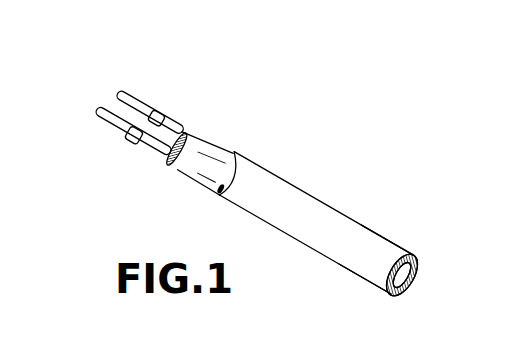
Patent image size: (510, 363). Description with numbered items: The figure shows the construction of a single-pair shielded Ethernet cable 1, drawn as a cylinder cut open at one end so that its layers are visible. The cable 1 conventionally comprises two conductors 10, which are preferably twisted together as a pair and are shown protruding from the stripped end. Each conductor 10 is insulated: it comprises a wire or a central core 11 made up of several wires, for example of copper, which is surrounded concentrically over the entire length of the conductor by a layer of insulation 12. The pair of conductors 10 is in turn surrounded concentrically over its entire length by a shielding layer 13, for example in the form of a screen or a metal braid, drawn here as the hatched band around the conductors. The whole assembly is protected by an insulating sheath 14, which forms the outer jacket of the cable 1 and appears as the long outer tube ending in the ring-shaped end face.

The single-pair shielded Ethernet cable 1 is at (331, 186).
The conductor 10 is at (141, 127).
The central core 11 is at (143, 103).
The layer of insulation 12 is at (177, 130).
The shielding layer 13 is at (223, 148).
The insulating sheath 14 is at (368, 238).